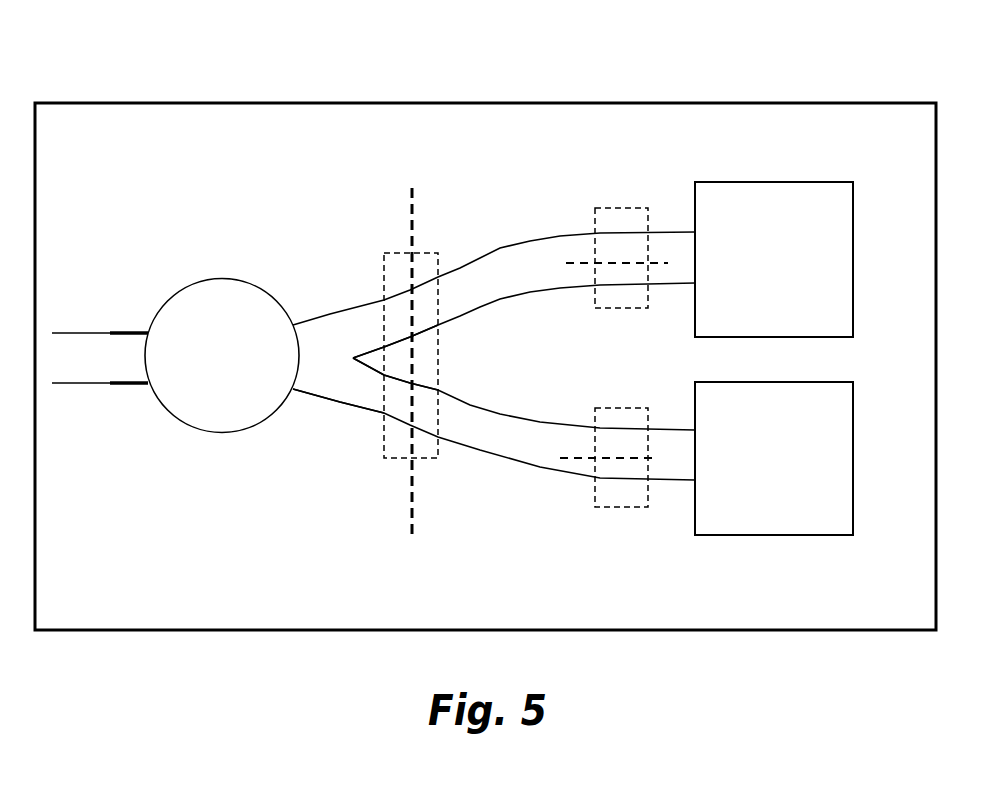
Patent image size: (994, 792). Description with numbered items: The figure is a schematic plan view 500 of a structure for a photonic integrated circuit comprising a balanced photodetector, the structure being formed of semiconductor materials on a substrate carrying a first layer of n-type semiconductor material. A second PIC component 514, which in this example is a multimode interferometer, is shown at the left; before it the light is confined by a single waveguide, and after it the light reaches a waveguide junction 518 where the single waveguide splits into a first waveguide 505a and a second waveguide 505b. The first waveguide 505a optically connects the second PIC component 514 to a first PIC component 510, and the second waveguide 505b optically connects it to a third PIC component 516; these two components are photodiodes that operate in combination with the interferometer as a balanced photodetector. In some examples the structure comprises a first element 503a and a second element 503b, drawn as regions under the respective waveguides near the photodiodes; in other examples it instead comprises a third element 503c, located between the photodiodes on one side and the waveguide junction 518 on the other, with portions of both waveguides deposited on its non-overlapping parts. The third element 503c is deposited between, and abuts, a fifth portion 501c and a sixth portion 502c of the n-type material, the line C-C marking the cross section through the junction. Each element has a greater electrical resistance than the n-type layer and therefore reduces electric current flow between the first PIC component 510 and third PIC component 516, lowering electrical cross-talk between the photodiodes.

The view 500 is at (510, 33).
The second PIC component 514 is at (175, 356).
The waveguide junction 518 is at (306, 437).
The first waveguide 505a is at (494, 262).
The second waveguide 505b is at (494, 463).
The first element 503a is at (635, 215).
The second element 503b is at (630, 506).
The third element 503c is at (460, 336).
The sixth portion 502c is at (480, 372).
The fifth portion 501c is at (366, 365).
The first PIC component 510 is at (774, 259).
The third PIC component 516 is at (774, 458).